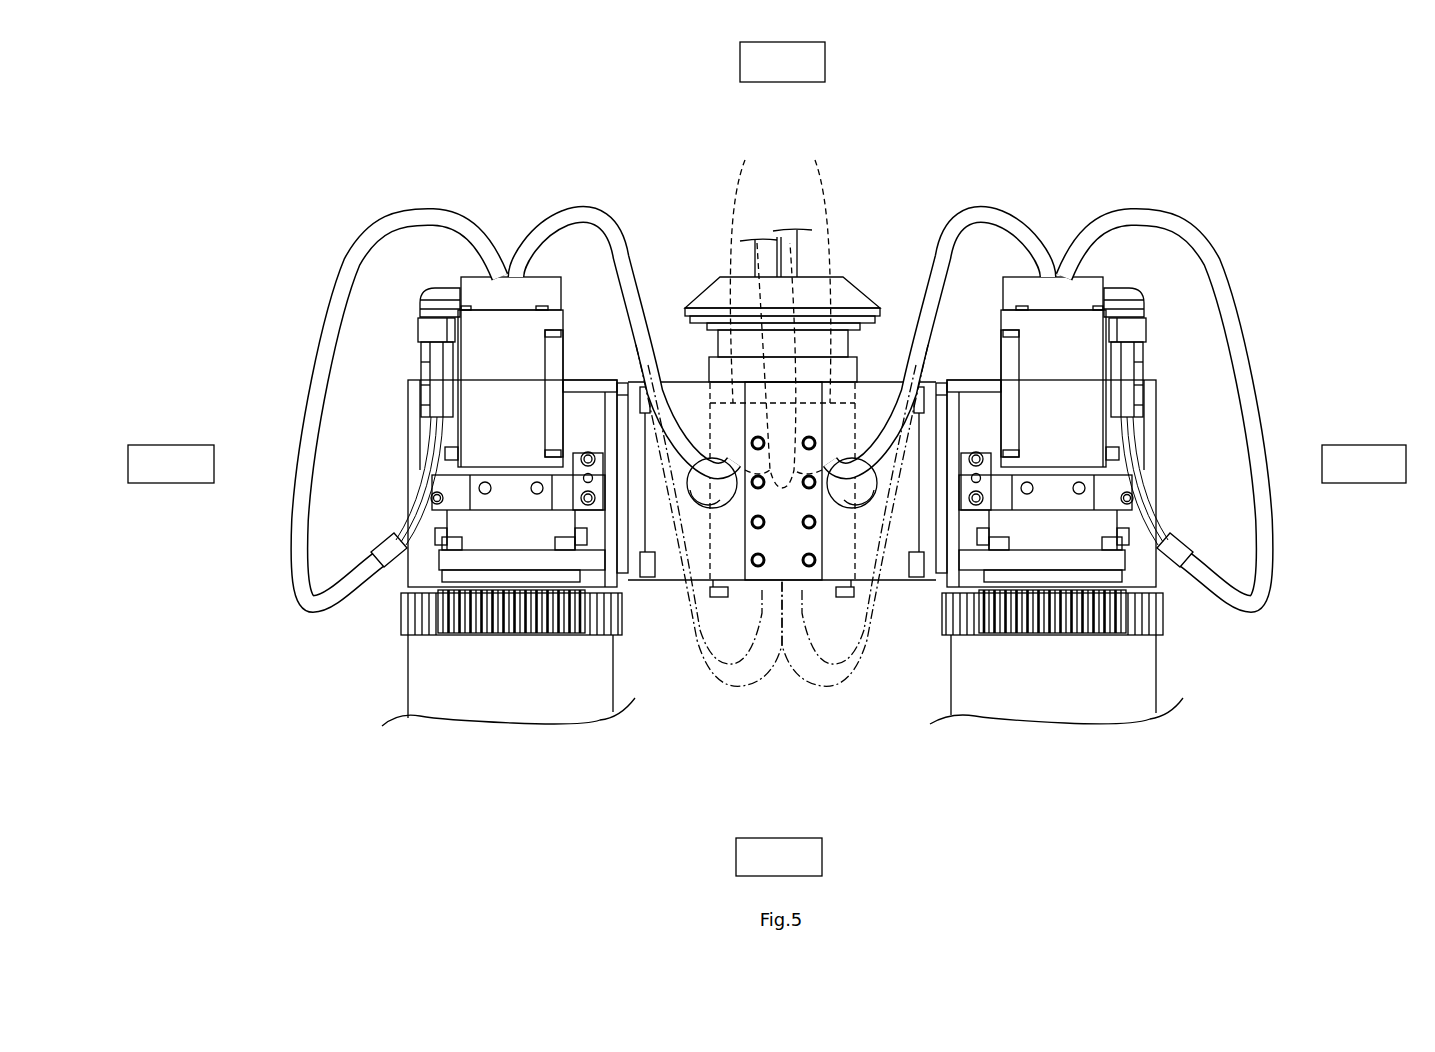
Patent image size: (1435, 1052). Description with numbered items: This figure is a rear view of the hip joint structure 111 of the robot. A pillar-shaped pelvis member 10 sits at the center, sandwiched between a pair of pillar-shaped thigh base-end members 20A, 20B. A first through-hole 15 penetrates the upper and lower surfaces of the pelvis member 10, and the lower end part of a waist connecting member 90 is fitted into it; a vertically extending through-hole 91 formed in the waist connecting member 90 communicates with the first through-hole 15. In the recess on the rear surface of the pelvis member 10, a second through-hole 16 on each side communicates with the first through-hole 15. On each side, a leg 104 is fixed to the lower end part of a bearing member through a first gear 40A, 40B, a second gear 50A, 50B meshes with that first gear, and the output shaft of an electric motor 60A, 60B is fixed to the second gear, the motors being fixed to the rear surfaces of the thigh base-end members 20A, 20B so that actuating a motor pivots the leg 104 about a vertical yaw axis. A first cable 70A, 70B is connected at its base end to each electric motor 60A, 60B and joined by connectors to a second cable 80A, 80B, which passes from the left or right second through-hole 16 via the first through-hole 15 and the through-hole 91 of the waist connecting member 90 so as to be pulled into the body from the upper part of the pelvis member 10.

The hip joint structure 111 is at (800, 27).
The pelvis member 10 is at (888, 382).
The first through-hole 15 is at (817, 268).
The second through-hole 16 is at (707, 493).
The thigh base-end member 20A is at (1147, 574).
The thigh base-end member 20B is at (417, 574).
The first gear 40A is at (1151, 618).
The first gear 40B is at (413, 618).
The second gear 50A is at (1048, 637).
The second gear 50B is at (507, 637).
The electric motor 60A is at (1051, 300).
The electric motor 60B is at (513, 300).
The first cable 70A is at (1124, 222).
The first cable 70B is at (440, 222).
The second cable 80A is at (987, 222).
The second cable 80B is at (577, 222).
The waist connecting member 90 is at (704, 290).
The through-hole 91 is at (776, 310).
The leg 104 is at (432, 688).